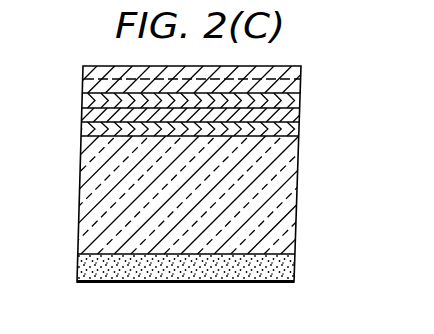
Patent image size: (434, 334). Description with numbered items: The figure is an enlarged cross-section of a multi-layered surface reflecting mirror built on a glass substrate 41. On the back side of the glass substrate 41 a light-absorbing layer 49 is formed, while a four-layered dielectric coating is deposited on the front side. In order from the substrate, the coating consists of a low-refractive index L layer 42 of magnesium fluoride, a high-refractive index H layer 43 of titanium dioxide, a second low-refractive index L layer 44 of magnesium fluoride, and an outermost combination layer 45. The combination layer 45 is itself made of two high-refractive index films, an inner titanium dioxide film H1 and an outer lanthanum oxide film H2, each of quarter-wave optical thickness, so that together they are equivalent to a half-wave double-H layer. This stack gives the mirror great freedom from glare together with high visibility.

The H1+H2 combination layer 45 is at (299, 79).
The L layer 44 is at (300, 98).
The H layer 43 is at (300, 115).
The L layer 42 is at (300, 131).
The glass substrate 41 is at (290, 199).
The light-absorbing layer 49 is at (290, 268).
The high-refractive index film H1 is at (90, 86).
The high-refractive index film H2 is at (88, 72).